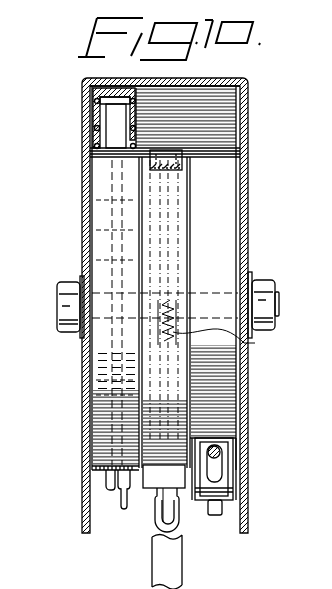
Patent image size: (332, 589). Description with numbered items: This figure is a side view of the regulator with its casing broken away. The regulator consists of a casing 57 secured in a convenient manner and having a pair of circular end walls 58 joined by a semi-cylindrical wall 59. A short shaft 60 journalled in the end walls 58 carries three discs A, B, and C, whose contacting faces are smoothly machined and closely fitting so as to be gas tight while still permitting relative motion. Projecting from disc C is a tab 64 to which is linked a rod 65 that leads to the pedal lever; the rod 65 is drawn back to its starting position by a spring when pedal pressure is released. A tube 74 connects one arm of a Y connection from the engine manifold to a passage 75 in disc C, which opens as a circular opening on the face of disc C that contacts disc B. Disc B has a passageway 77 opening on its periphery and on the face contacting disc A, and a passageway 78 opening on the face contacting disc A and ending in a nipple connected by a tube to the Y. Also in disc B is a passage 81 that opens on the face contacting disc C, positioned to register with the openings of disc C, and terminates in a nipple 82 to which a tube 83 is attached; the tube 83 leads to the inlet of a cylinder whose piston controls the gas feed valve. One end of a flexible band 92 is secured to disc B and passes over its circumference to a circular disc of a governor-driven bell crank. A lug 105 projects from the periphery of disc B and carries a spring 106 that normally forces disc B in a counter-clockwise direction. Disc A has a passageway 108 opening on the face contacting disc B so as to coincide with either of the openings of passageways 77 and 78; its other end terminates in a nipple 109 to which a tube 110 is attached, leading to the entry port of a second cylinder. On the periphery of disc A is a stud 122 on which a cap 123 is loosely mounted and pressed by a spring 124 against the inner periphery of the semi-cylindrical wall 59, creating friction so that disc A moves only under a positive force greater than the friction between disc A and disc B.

The casing 57 is at (254, 107).
The circular end walls 58 is at (86, 213).
The semi-cylindrical wall 59 is at (228, 80).
The short shaft 60 is at (280, 299).
The tab 64 is at (233, 496).
The rod 65 is at (218, 452).
The tube 74 is at (215, 516).
The passage 75 is at (251, 412).
The passageway 77 is at (96, 197).
The passageway 78 is at (192, 242).
The passage 81 is at (146, 488).
The nipple 82 is at (182, 505).
The tube 83 is at (162, 522).
The flexible band 92 is at (181, 167).
The lug 105 is at (170, 300).
The spring 106 is at (228, 342).
The passageway 108 is at (92, 391).
The nipple 109 is at (103, 470).
The tube 110 is at (120, 509).
The stud 122 is at (113, 128).
The cap 123 is at (93, 100).
The spring 124 is at (95, 150).
The disc A is at (100, 170).
The disc B is at (180, 212).
The disc C is at (222, 176).